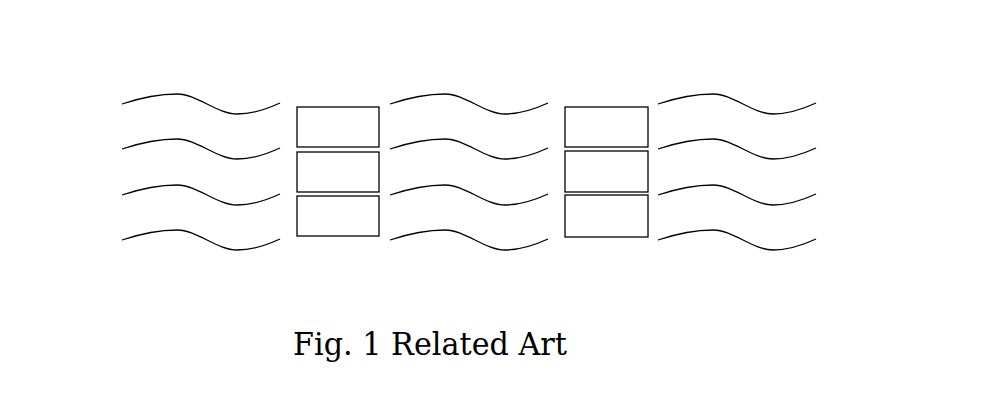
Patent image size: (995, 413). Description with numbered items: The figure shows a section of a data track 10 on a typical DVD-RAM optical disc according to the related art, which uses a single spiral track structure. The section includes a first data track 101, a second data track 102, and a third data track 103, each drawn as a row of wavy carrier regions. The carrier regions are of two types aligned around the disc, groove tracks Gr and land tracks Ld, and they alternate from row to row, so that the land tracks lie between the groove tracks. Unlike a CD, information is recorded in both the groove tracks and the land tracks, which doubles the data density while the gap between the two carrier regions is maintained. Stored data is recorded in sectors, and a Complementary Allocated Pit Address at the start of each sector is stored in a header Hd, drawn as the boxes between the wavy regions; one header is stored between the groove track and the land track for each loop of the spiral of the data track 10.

The data track 10 is at (788, 59).
The first data track 101 is at (97, 124).
The second data track 102 is at (97, 174).
The third data track 103 is at (97, 223).